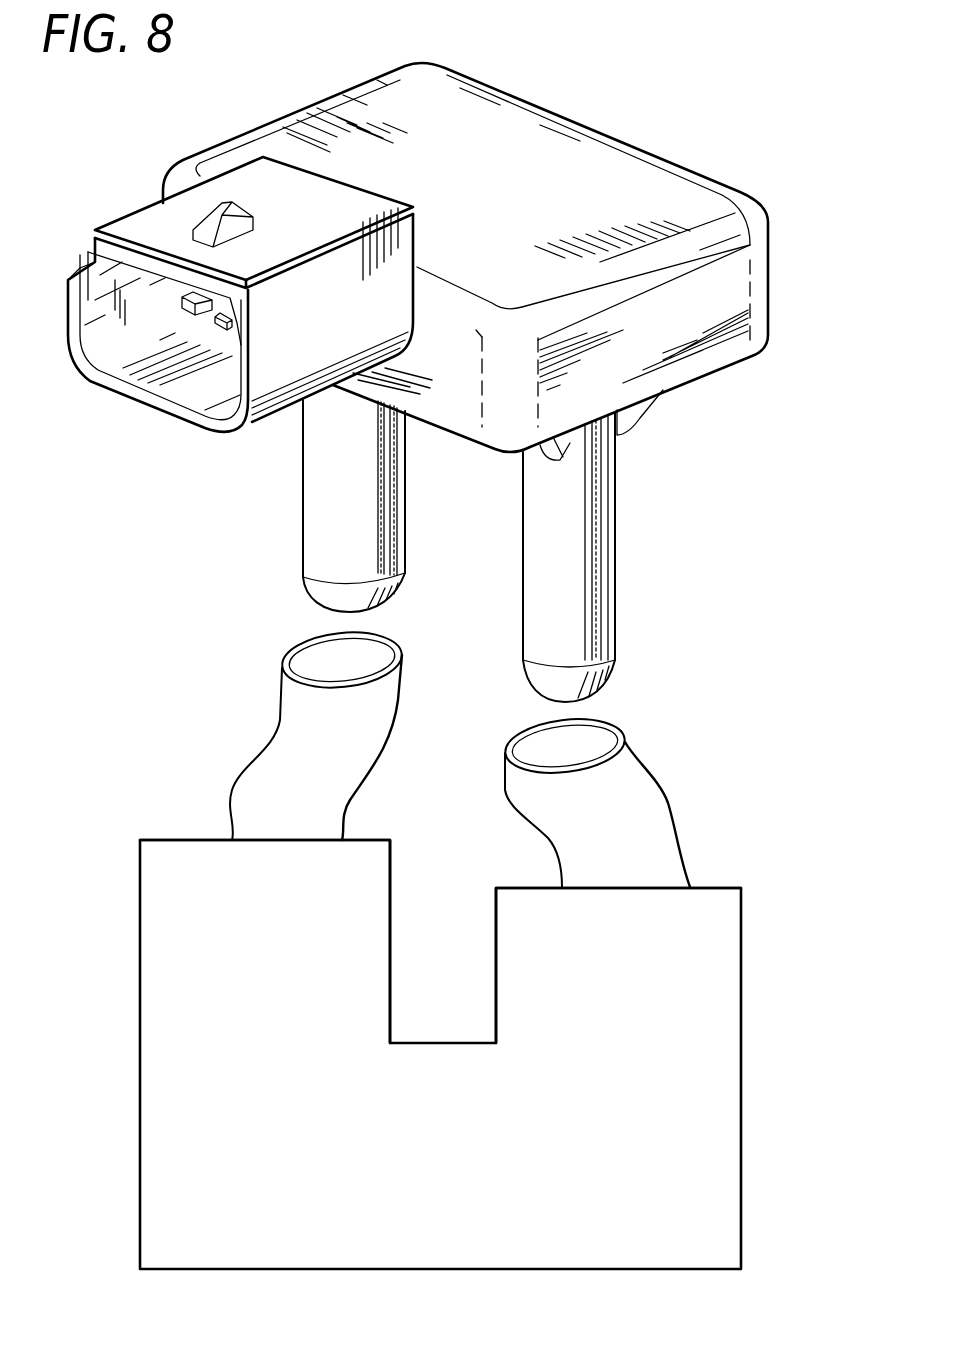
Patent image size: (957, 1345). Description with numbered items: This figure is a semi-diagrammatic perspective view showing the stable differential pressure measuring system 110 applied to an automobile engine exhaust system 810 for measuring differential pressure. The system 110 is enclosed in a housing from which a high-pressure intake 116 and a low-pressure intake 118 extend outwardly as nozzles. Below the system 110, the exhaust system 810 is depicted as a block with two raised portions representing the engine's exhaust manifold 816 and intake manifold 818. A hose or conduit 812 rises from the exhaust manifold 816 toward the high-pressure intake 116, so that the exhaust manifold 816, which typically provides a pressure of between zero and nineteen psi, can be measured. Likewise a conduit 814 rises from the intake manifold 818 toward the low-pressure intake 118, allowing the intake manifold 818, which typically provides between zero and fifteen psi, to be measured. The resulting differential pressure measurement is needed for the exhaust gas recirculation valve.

The stable differential pressure measuring system 110 is at (760, 460).
The high-pressure intake 116 is at (600, 647).
The low-pressure intake 118 is at (317, 542).
The exhaust system 810 is at (447, 1136).
The hose or conduit 812 is at (643, 778).
The conduit 814 is at (280, 747).
The exhaust manifold 816 is at (701, 988).
The intake manifold 818 is at (189, 982).